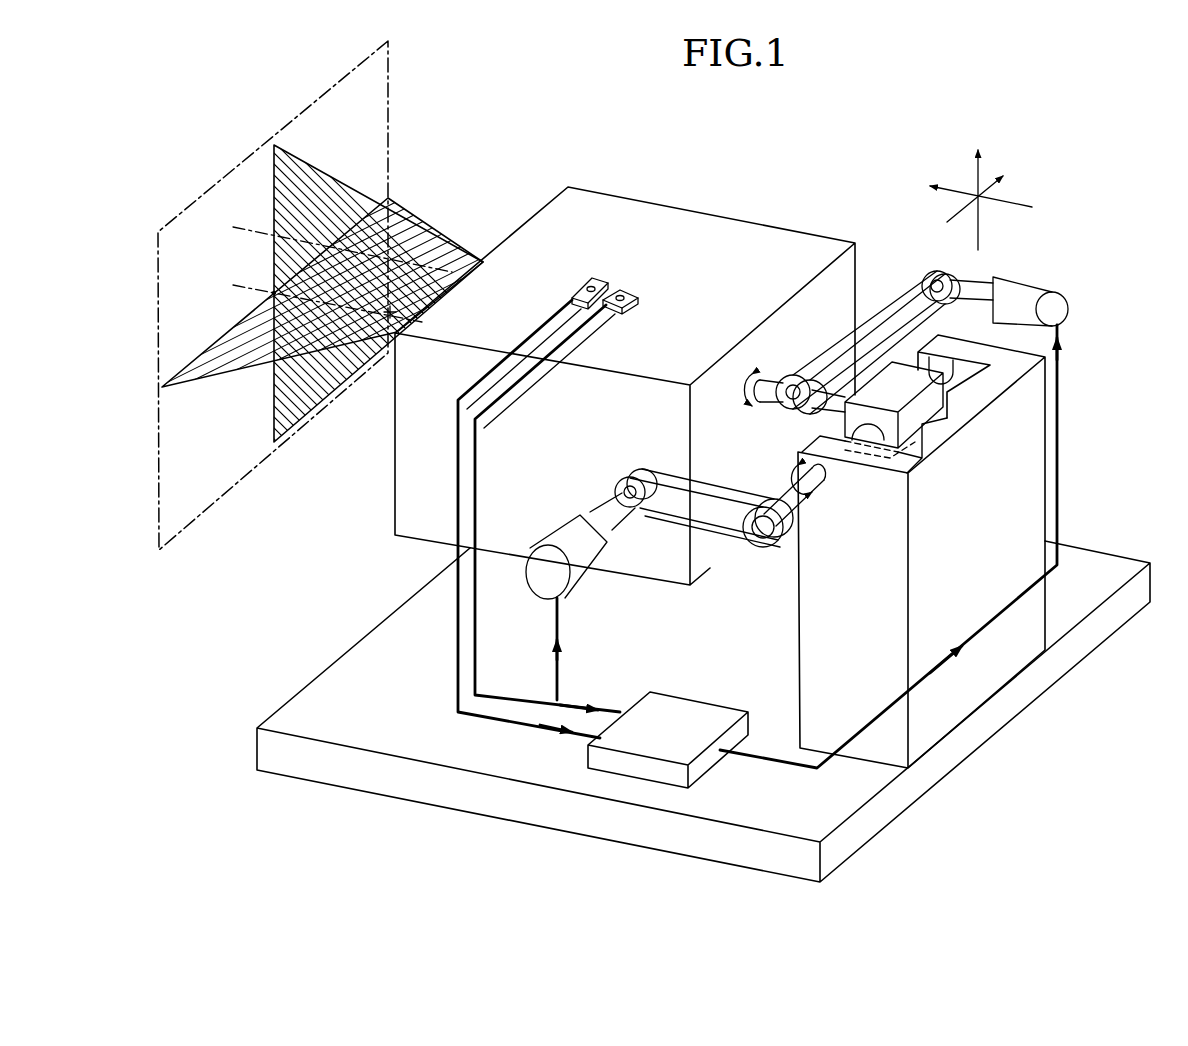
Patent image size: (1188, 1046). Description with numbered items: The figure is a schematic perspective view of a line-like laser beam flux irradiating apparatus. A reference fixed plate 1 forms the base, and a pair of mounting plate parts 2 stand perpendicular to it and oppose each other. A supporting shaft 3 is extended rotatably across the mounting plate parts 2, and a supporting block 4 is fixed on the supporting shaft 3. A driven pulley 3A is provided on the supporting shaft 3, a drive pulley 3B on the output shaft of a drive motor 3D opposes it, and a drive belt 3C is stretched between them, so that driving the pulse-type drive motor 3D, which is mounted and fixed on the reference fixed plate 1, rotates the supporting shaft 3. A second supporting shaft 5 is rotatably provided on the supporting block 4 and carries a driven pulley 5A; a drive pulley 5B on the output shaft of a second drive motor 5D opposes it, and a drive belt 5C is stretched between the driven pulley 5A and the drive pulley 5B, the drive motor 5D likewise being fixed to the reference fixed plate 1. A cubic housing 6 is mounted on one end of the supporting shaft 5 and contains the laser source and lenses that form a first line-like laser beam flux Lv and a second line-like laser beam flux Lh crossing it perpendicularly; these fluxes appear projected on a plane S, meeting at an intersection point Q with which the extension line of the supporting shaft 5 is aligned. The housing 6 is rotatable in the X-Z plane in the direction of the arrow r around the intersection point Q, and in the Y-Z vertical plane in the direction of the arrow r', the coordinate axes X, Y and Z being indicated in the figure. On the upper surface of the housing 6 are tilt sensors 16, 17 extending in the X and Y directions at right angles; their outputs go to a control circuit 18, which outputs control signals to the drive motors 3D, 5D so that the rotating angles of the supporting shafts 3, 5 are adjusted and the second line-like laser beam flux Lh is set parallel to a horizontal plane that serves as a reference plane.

The reference fixed plate 1 is at (430, 740).
The mounting plate parts 2 is at (975, 357).
The supporting shaft 3 is at (920, 450).
The driven pulley 3A is at (765, 548).
The drive pulley 3B is at (645, 510).
The drive belt 3C is at (750, 530).
The drive motor 3D is at (578, 565).
The supporting block 4 is at (913, 385).
The supporting shaft 5 is at (800, 375).
The driven pulley 5A is at (815, 380).
The drive pulley 5B is at (950, 282).
The drive belt 5C is at (927, 285).
The drive motor 5D is at (1025, 295).
The housing 6 is at (636, 213).
The tilt sensor 16 is at (572, 298).
The tilt sensor 17 is at (620, 298).
The control circuit 18 is at (665, 757).
The reference plane S is at (388, 92).
The first line-like laser beam flux Lv is at (273, 203).
The second line-like laser beam flux Lh is at (388, 197).
The intersection point Q is at (274, 293).
The arrow r is at (770, 362).
The arrow r' is at (821, 511).
The X direction X is at (987, 187).
The Y direction Y is at (968, 189).
The Z direction Z is at (970, 181).